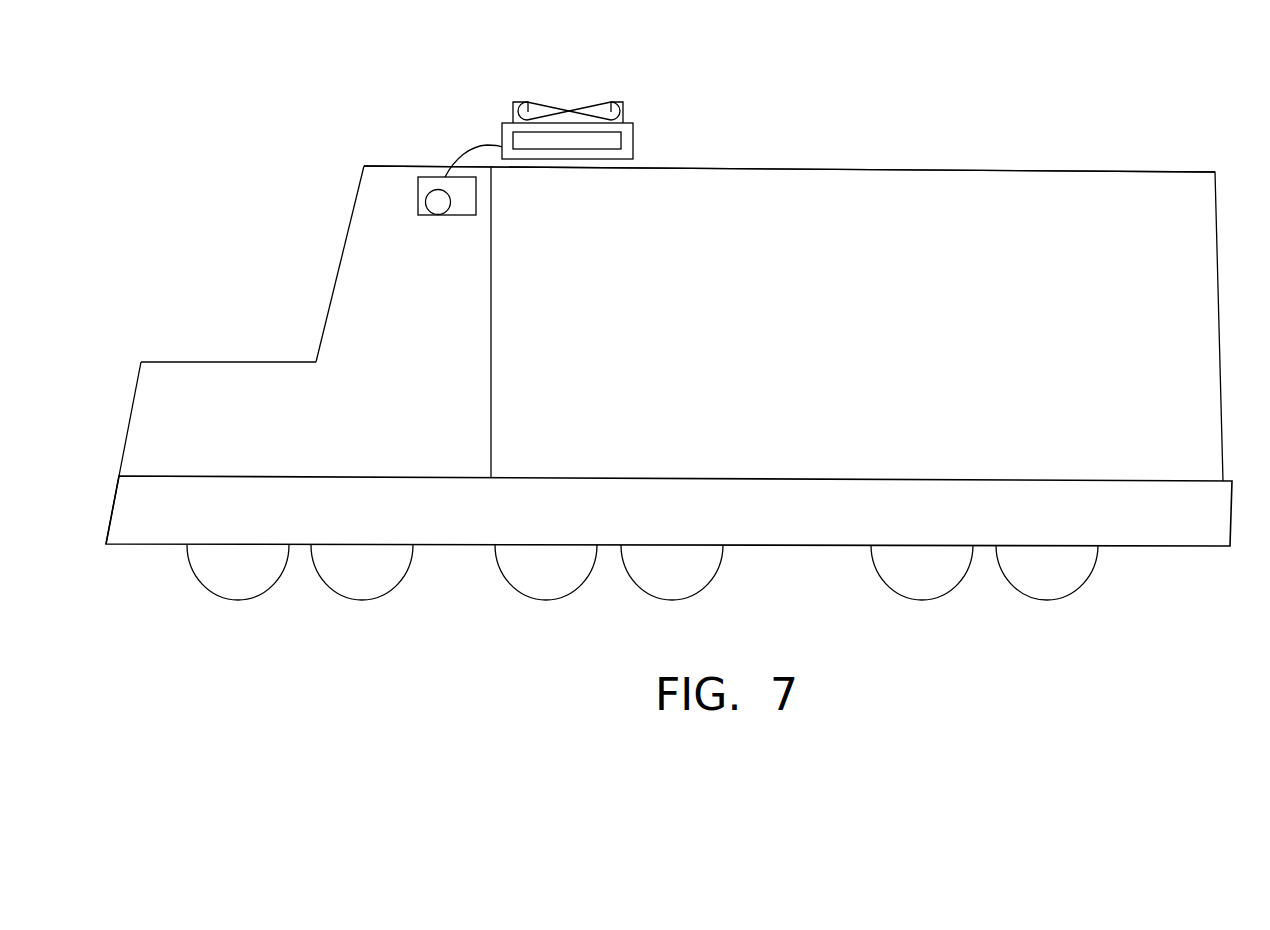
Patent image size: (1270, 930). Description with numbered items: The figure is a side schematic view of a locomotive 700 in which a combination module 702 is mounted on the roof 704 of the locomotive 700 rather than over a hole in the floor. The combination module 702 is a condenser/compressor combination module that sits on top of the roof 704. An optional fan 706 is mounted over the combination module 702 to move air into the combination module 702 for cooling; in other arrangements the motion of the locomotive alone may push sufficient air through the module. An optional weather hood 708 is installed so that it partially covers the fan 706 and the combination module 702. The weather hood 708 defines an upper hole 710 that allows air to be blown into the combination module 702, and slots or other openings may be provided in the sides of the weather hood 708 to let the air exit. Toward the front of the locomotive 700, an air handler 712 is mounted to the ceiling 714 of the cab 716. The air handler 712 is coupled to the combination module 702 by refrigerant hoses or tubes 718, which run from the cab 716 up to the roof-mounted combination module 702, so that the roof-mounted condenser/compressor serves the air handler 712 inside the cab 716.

The locomotive 700 is at (922, 146).
The combination module 702 is at (568, 152).
The roof 704 is at (679, 167).
The fan 706 is at (592, 103).
The weather hood 708 is at (630, 123).
The upper hole 710 is at (552, 88).
The air handler 712 is at (457, 216).
The ceiling 714 is at (375, 168).
The cab 716 is at (362, 280).
The refrigerant hoses or tubes 718 is at (475, 145).